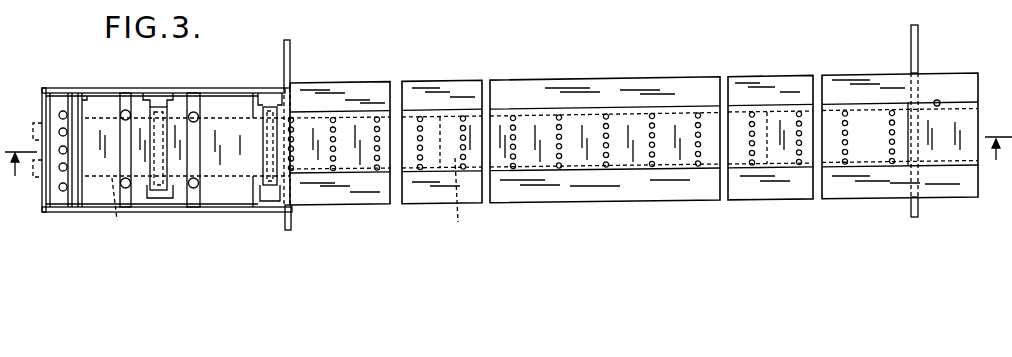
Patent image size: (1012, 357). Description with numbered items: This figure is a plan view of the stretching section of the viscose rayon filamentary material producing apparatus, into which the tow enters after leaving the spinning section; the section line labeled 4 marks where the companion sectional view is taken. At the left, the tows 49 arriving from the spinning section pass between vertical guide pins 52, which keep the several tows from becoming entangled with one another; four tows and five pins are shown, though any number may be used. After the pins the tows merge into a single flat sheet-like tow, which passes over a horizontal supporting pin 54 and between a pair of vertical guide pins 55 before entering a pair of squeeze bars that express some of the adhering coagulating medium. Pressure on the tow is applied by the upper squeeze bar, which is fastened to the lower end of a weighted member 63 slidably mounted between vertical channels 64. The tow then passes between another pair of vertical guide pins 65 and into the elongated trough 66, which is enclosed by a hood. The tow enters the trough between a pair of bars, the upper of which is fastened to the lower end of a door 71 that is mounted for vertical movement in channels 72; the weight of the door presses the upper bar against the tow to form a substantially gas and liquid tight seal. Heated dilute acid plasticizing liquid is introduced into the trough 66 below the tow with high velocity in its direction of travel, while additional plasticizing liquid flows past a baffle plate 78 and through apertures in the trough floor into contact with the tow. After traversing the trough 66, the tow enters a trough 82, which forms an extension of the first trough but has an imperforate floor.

The section line 4- 4 is at (508, 143).
The tows 49 is at (34, 123).
The vertical guide pins 52 is at (63, 112).
The horizontal supporting pin 54 is at (80, 205).
The vertical guide pins 55 is at (125, 110).
The weighted member 63 is at (160, 196).
The vertical channels 64 is at (158, 107).
The vertical guide pins 65 is at (194, 112).
The elongated trough 66 is at (526, 109).
The door 71 is at (265, 143).
The channels 72 is at (268, 104).
The baffle plate 78 is at (457, 202).
The trough 82 is at (938, 100).